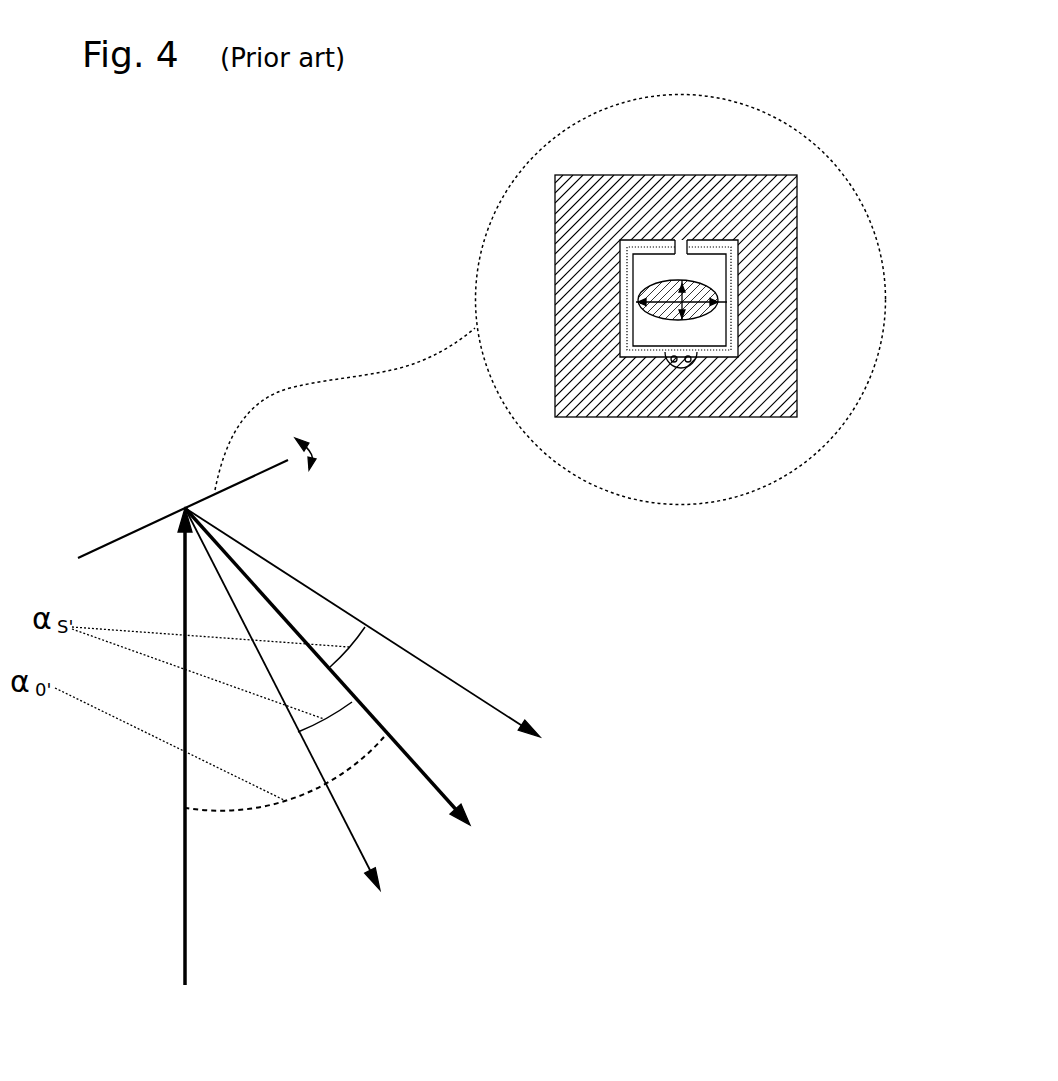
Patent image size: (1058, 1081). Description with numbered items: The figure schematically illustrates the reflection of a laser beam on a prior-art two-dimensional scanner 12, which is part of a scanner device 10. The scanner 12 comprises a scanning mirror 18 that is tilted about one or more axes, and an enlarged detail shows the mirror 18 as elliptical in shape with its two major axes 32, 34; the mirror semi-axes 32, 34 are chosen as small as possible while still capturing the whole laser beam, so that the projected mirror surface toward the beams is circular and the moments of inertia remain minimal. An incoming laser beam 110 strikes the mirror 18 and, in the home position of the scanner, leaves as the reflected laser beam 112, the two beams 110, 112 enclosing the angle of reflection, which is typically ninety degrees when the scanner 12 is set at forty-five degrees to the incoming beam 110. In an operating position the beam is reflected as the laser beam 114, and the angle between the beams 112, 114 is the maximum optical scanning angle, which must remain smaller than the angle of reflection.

The scanner device 10 is at (134, 412).
The 2D scanner 12 is at (125, 532).
The scanning mirror 18 is at (704, 292).
The major axis of the ellipse 34 is at (682, 306).
The major axis of the ellipse 32 is at (675, 305).
The incoming laser beam 110 is at (183, 847).
The reflected laser beam in home position 112 is at (428, 775).
The reflected laser beam in operating position 114 is at (353, 836).